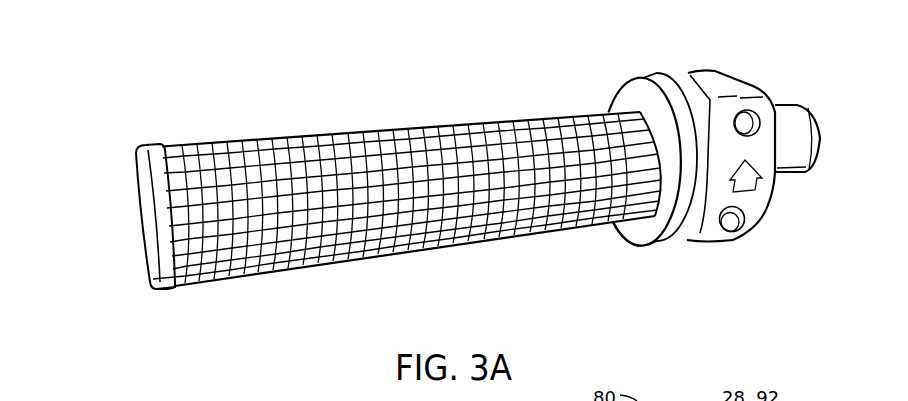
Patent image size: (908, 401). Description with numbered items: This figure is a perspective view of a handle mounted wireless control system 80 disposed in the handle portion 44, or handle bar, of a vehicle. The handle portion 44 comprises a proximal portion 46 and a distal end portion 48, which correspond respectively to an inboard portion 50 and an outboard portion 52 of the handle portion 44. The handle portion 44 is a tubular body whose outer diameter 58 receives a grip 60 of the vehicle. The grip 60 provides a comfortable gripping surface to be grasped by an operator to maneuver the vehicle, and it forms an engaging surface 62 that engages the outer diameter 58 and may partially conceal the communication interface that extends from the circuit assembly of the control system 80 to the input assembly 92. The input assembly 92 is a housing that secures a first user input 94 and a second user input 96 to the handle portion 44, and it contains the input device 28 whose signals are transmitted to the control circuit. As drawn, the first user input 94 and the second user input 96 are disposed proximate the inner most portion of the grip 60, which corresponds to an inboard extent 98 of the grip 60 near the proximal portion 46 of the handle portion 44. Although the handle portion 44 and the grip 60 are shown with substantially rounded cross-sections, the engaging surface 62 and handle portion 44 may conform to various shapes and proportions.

The wireless control system 80 is at (237, 115).
The grip 60 is at (403, 130).
The engaging surface 62 is at (139, 246).
The distal end portion 48 is at (182, 300).
The outboard portion 52 is at (243, 317).
The input device 28 is at (620, 40).
The input assembly 92 is at (626, 138).
The inboard extent 98 is at (630, 259).
The handle portion 44 is at (787, 87).
The proximal portion 46 is at (793, 227).
The inboard portion 50 is at (748, 243).
The first user input 94 is at (757, 125).
The second user input 96 is at (742, 218).
The outer diameter 58 is at (798, 125).